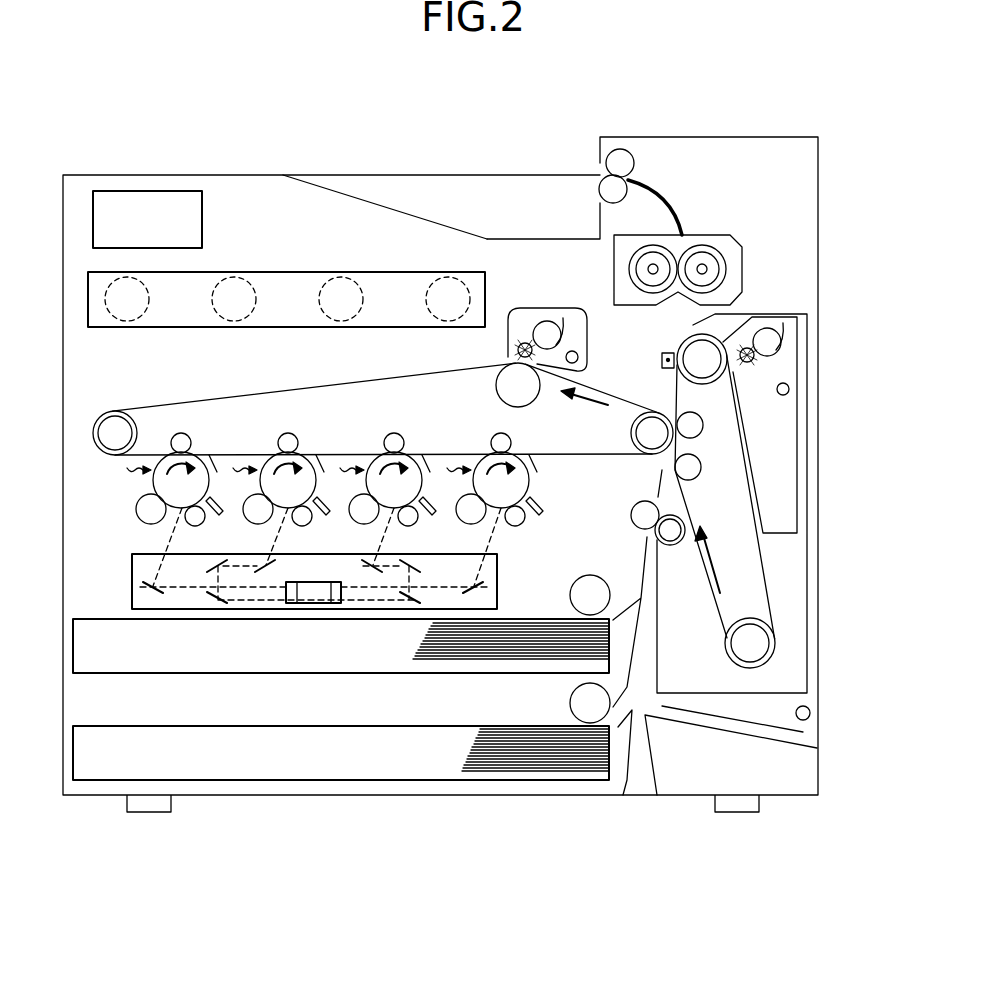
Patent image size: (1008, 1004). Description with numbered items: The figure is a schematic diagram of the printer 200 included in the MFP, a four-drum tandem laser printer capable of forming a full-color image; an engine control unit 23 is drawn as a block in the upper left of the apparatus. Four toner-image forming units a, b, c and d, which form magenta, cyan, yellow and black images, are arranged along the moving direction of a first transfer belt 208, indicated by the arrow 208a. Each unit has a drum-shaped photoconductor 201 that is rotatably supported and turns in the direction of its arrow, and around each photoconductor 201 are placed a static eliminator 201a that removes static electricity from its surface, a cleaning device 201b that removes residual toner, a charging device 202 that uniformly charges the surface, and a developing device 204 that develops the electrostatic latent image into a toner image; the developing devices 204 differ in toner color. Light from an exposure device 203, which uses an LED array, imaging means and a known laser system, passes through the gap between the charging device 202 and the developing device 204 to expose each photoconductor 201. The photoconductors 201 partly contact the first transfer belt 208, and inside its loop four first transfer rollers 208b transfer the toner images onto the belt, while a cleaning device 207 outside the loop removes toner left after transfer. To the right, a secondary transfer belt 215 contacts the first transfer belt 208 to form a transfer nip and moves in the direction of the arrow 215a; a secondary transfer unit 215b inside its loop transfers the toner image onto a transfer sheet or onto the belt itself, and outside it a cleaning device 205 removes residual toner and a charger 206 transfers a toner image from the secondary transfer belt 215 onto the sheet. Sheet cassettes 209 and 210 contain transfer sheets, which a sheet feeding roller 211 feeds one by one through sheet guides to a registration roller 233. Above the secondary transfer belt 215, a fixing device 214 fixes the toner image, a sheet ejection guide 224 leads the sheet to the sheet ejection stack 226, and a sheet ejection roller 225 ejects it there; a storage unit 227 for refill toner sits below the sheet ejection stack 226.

The printer 200 is at (393, 150).
The engine control unit 23 is at (204, 217).
The sheet ejection stack 226 is at (402, 211).
The storage unit 227 is at (313, 272).
The sheet ejection roller 225 is at (597, 175).
The sheet ejection guide 224 is at (663, 191).
The fixing device 214 is at (706, 235).
The cleaning device 207 is at (588, 334).
The charger 206 is at (661, 361).
The first transfer belt 208 is at (582, 454).
The arrow 208a is at (586, 402).
The first transfer rollers 208b is at (178, 433).
The photoconductors 201 is at (152, 482).
The static eliminator 201a is at (216, 516).
The cleaning device 201b is at (212, 454).
The charging device 202 is at (194, 522).
The developing device 204 is at (143, 516).
The exposure device 203 is at (132, 576).
The cleaning device 205 is at (797, 467).
The secondary transfer belt 215 is at (712, 598).
The arrow 215a is at (717, 570).
The secondary transfer unit 215b is at (703, 433).
The registration roller 233 is at (637, 512).
The sheet feeding roller 211 is at (598, 577).
The sheet cassette 209 is at (336, 673).
The sheet cassette 210 is at (336, 782).